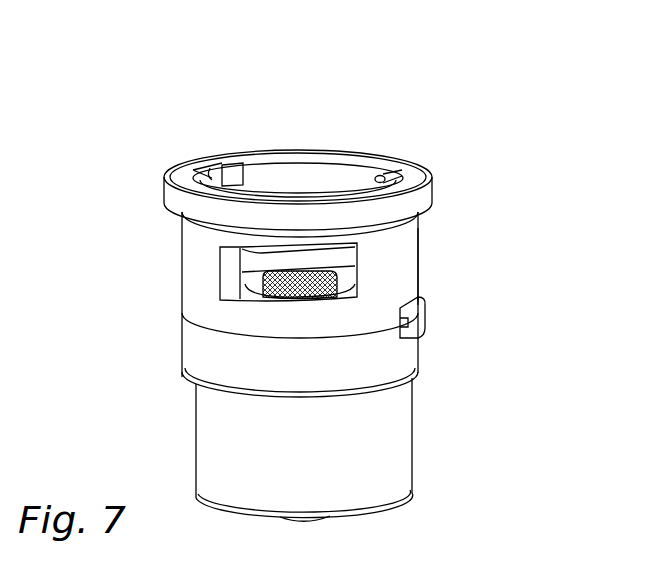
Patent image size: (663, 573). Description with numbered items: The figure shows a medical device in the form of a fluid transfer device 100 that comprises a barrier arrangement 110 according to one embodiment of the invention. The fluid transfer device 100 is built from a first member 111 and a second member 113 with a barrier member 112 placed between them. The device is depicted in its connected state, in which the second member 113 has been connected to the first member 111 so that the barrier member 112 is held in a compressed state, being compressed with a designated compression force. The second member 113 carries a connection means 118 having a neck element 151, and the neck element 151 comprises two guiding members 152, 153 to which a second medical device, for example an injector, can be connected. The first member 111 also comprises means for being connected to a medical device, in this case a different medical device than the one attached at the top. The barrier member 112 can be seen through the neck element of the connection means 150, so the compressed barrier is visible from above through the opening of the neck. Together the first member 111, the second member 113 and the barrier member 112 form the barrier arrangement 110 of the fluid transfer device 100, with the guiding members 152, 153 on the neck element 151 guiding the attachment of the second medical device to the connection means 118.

The fluid transfer device 100 is at (446, 75).
The barrier arrangement 110 is at (172, 361).
The first member 111 is at (393, 448).
The barrier member 112 is at (287, 275).
The second member 113 is at (152, 239).
The connection means 118 is at (436, 315).
The connection means 150 is at (294, 136).
The neck element 151 is at (398, 261).
The guiding member 152 is at (228, 162).
The guiding member 153 is at (388, 176).